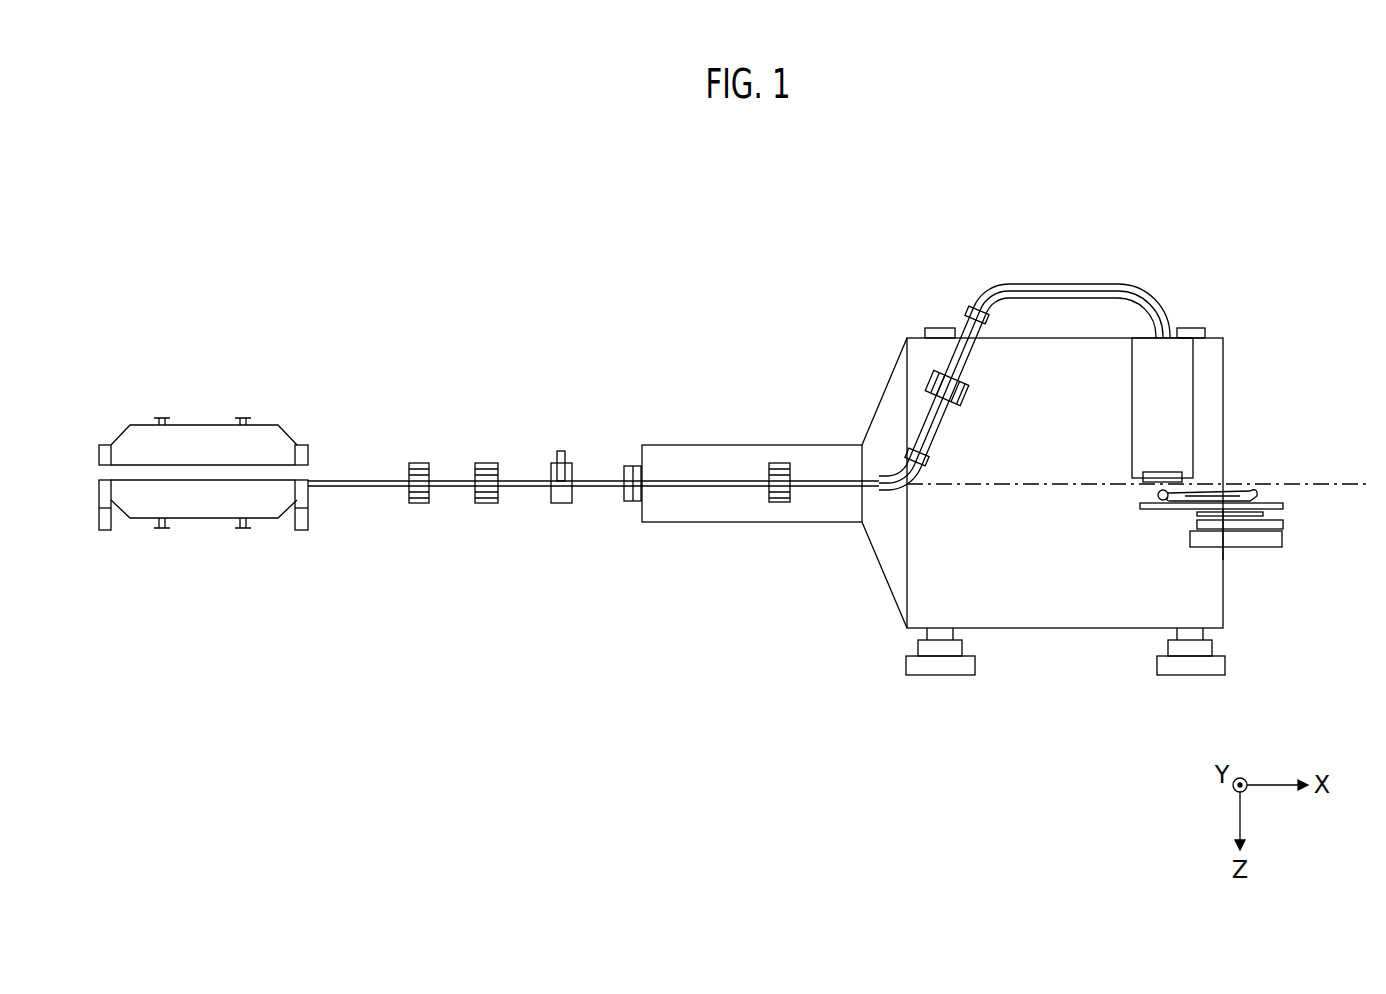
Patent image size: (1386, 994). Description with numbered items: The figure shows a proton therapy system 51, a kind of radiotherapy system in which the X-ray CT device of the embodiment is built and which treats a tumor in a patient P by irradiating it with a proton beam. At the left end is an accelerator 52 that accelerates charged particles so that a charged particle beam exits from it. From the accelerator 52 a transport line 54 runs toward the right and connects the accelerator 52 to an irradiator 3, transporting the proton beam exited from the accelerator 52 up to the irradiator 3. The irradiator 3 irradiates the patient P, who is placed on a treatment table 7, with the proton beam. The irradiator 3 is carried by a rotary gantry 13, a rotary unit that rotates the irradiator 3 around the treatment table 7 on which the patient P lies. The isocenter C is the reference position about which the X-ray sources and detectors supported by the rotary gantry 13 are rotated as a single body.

The proton therapy system 51 is at (348, 218).
The accelerator 52 is at (140, 424).
The transport line 54 is at (1172, 225).
The rotary gantry 13 is at (1224, 592).
The irradiator 3 is at (1195, 380).
The isocenter C is at (985, 487).
The patient P is at (1195, 483).
The treatment table 7 is at (1287, 505).